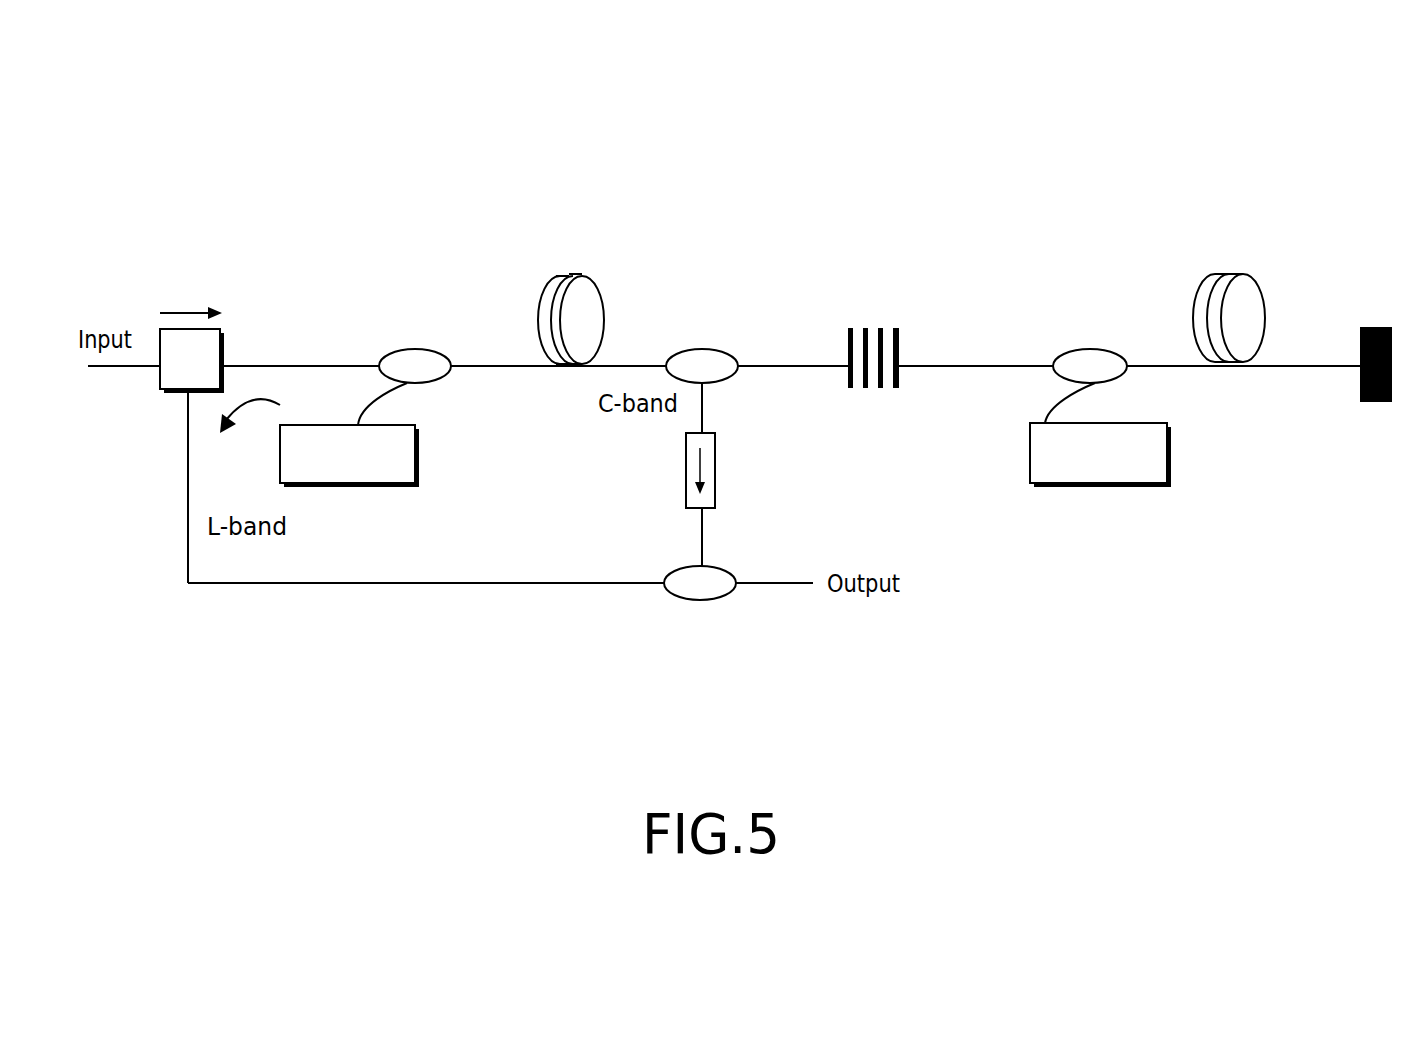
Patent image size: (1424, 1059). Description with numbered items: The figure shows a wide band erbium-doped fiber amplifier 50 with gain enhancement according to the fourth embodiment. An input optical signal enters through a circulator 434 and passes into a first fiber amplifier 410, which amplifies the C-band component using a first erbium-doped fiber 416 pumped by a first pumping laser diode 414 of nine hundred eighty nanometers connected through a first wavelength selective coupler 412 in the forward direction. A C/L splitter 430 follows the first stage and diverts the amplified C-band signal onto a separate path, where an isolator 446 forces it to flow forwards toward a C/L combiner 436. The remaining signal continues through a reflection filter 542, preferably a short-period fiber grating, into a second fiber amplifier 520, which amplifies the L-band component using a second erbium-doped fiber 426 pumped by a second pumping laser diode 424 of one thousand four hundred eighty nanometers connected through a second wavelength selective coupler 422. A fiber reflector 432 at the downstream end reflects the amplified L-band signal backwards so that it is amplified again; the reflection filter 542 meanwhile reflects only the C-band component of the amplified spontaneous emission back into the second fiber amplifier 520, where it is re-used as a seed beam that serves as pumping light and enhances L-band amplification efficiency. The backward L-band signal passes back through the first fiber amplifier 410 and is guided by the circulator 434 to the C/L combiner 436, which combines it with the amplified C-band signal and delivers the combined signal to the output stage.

The fiber amplifier 50 is at (795, 88).
The first fiber amplifier 410 is at (585, 175).
The second fiber amplifier 520 is at (1280, 250).
The circulator 434 is at (168, 394).
The first wavelength selective coupler 412 is at (446, 378).
The first pumping laser diode 414 is at (419, 460).
The first erbium-doped fiber 416 is at (532, 322).
The C/L splitter 430 is at (726, 380).
The reflection filter 542 is at (898, 385).
The second wavelength selective coupler 422 is at (1122, 377).
The second pumping laser diode 424 is at (1171, 460).
The second erbium-doped fiber 426 is at (1266, 318).
The fiber reflector 432 is at (1378, 403).
The isolator 446 is at (686, 472).
The C/L combiner 436 is at (722, 568).